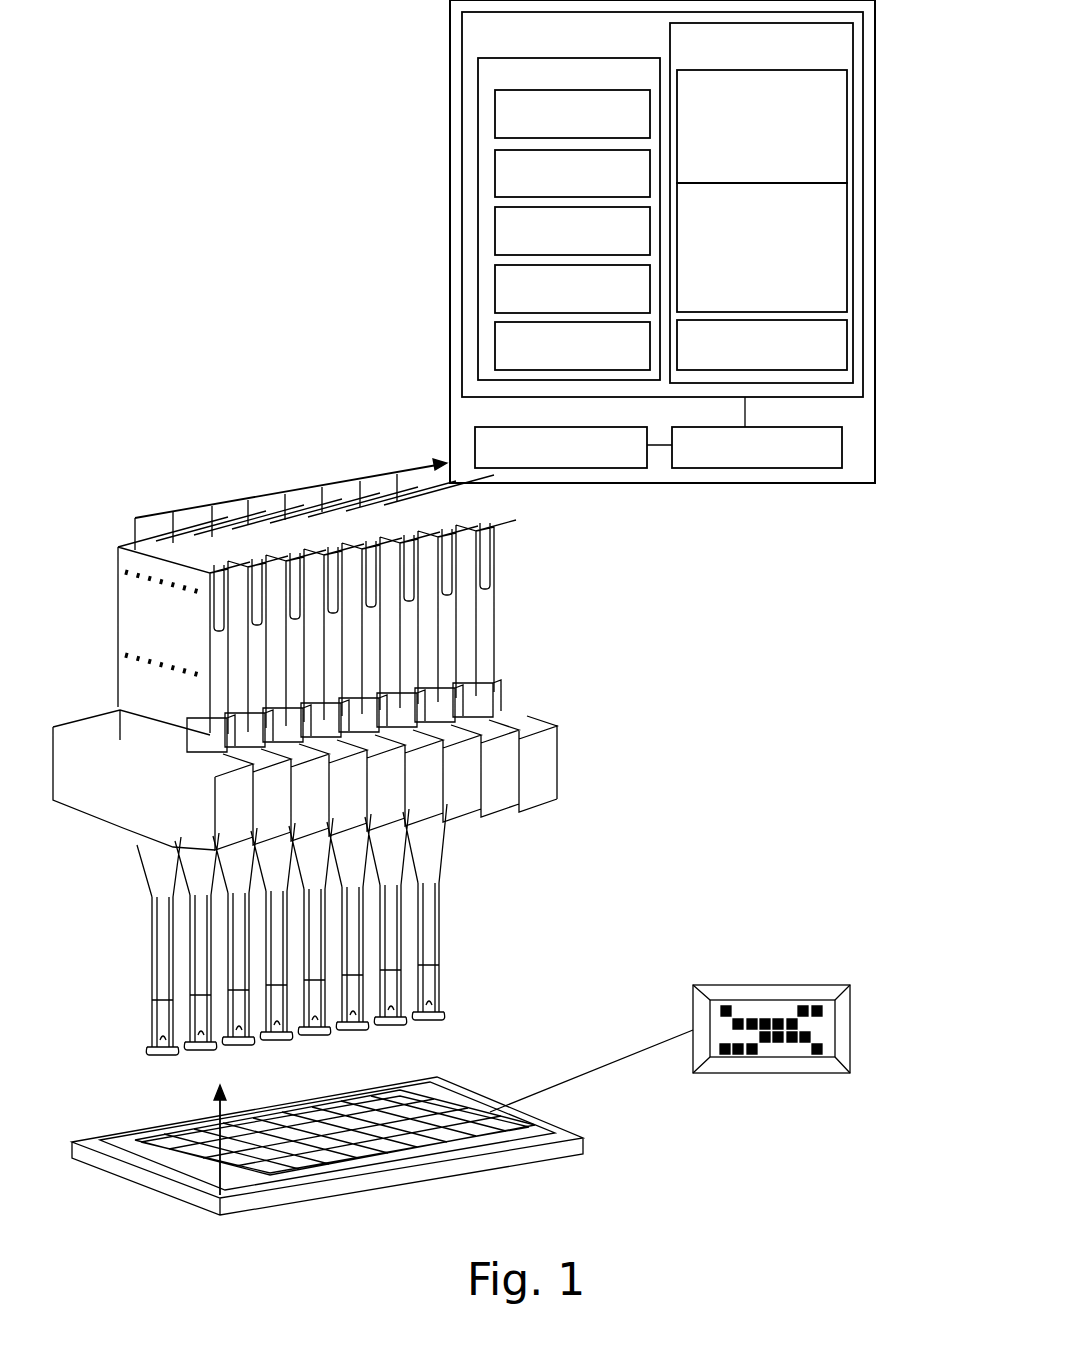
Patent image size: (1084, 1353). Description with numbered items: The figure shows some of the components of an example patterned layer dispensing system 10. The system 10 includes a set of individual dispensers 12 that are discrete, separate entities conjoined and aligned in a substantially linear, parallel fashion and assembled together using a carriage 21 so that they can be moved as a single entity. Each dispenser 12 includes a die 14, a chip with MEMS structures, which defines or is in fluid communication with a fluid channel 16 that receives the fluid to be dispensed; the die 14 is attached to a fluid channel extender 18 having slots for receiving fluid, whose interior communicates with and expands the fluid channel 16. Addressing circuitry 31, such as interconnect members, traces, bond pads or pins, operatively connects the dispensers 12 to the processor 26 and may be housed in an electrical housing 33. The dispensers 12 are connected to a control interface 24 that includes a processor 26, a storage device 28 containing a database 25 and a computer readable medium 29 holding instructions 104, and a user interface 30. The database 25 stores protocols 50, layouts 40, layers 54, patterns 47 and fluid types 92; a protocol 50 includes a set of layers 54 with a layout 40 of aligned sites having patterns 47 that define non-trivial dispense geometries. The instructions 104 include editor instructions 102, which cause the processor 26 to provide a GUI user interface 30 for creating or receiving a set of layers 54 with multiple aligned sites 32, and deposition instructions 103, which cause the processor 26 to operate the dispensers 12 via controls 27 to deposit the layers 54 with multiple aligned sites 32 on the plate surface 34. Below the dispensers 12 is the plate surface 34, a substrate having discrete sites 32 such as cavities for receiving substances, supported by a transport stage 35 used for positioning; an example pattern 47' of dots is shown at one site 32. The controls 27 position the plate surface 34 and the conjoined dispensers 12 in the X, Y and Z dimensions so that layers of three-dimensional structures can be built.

The patterned layer dispensing system 10 is at (110, 438).
The dispenser 12 is at (450, 917).
The die 14 is at (162, 1057).
The fluid channel 16 is at (155, 1042).
The fluid channel extender 18 is at (155, 1003).
The carriage 21 is at (537, 766).
The control interface 24 is at (450, 347).
The database 25 is at (478, 114).
The processor 26 is at (842, 452).
The controls 27 is at (568, 468).
The storage device 28 is at (875, 36).
The computer readable medium 29 is at (853, 58).
The user interface 30 is at (847, 345).
The addressing circuitry 31 is at (265, 493).
The site 32 is at (806, 1000).
The electrical housing 33 is at (512, 693).
The plate surface 34 is at (534, 1122).
The transport stage 35 is at (552, 1134).
The layout 40 is at (572, 173).
The pattern 47 is at (572, 289).
The example pattern 47' is at (771, 993).
The protocol 50 is at (572, 114).
The layer 54 is at (572, 231).
The fluid type 92 is at (572, 346).
The editor instructions 102 is at (847, 110).
The deposition instructions 103 is at (847, 258).
The instructions 104 is at (858, 192).